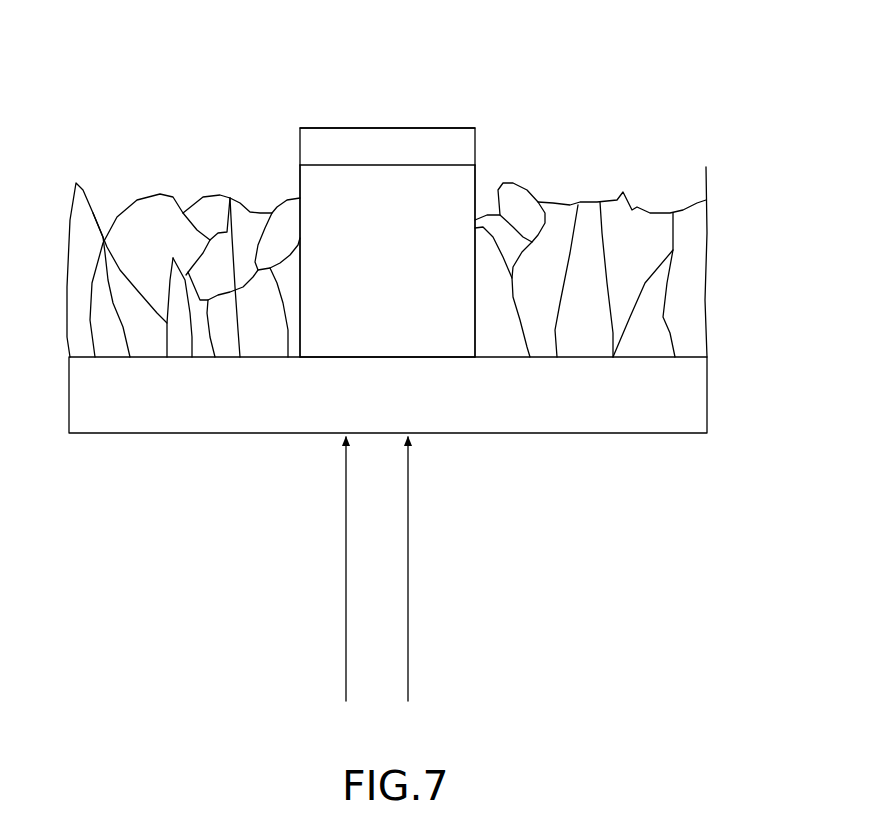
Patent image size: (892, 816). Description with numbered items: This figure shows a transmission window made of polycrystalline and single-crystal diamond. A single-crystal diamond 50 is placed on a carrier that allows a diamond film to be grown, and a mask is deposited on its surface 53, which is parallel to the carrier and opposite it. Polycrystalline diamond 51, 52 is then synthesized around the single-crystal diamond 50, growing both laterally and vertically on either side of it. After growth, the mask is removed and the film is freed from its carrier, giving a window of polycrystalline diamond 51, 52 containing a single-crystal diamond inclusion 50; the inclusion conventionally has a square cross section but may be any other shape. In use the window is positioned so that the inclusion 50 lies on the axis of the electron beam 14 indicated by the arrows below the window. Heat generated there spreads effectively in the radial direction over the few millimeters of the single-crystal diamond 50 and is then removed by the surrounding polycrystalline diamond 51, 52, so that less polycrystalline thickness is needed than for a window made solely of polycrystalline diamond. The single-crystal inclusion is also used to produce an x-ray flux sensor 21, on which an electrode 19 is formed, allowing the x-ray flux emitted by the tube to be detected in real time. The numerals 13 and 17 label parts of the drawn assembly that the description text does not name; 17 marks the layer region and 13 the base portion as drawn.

The substrate 13 is at (712, 442).
The electron beam 14 is at (408, 617).
The coating layer 17 is at (718, 203).
The electrode 19 is at (403, 128).
The x-ray flux sensor 21 is at (280, 161).
The single-crystal diamond 50 is at (463, 182).
The polycrystalline diamond 51 is at (140, 227).
The polycrystalline diamond 52 is at (628, 220).
The surface 53 is at (342, 165).